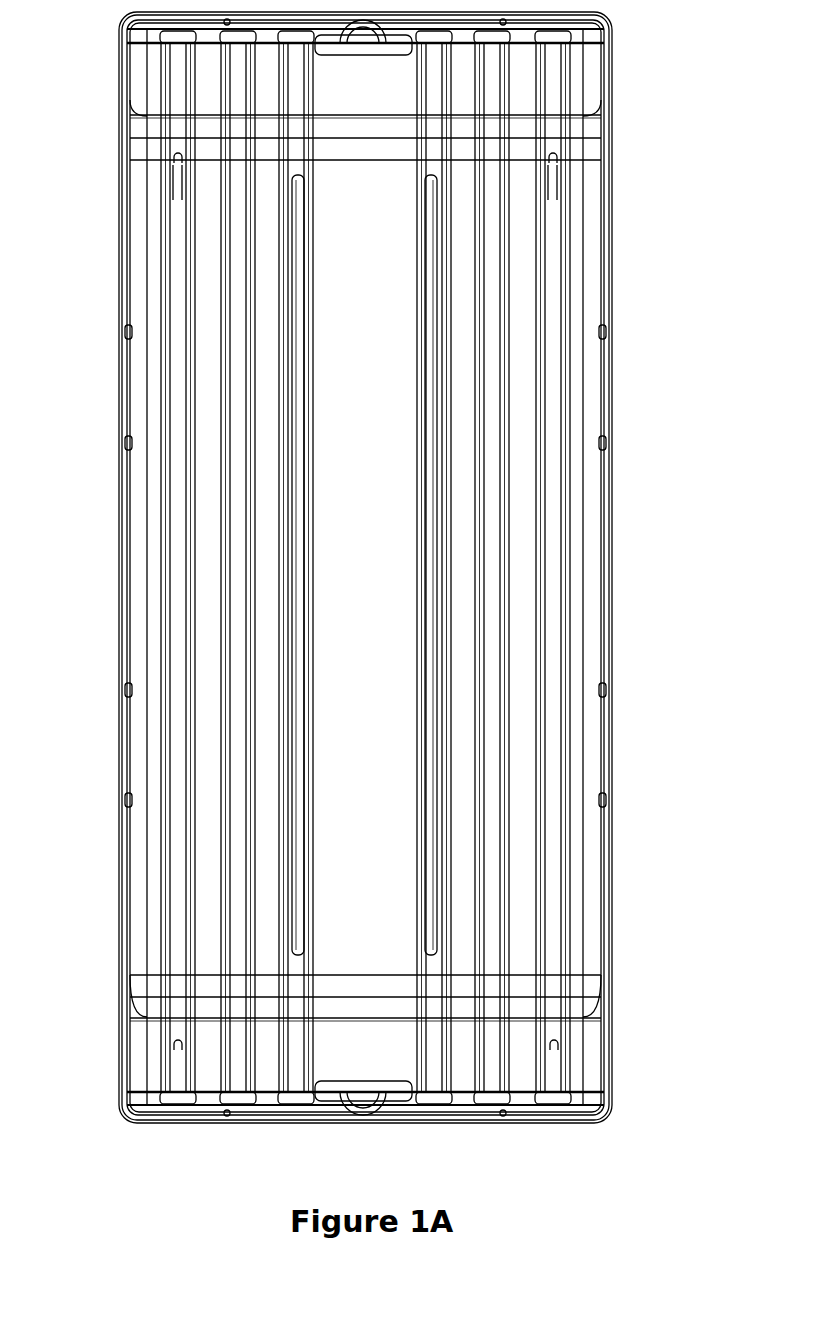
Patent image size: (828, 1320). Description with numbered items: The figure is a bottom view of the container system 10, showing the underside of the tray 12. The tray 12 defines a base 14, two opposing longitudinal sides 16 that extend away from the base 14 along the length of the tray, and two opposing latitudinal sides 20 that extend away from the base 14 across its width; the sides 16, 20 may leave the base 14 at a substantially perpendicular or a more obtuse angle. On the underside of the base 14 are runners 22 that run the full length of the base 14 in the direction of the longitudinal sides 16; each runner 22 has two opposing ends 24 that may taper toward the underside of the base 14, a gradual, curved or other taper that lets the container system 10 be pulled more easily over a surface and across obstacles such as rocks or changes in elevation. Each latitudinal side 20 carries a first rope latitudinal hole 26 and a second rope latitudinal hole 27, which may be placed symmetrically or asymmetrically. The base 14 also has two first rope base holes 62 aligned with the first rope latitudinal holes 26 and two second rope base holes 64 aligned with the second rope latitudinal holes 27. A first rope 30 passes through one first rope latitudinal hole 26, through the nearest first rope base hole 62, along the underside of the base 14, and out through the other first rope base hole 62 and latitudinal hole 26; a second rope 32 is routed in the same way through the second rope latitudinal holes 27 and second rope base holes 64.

The container system 10 is at (708, 93).
The tray 12 is at (620, 276).
The base 14 is at (364, 565).
The longitudinal sides 16 is at (118, 543).
The latitudinal sides 20 is at (365, 569).
The runners 22 is at (520, 398).
The opposing ends 24 is at (268, 100).
The first rope latitudinal holes 26 is at (176, 1044).
The second rope latitudinal holes 27 is at (556, 1044).
The first rope 30 is at (177, 1073).
The second rope 32 is at (552, 1063).
The first rope base holes 62 is at (176, 160).
The second rope base holes 64 is at (556, 158).